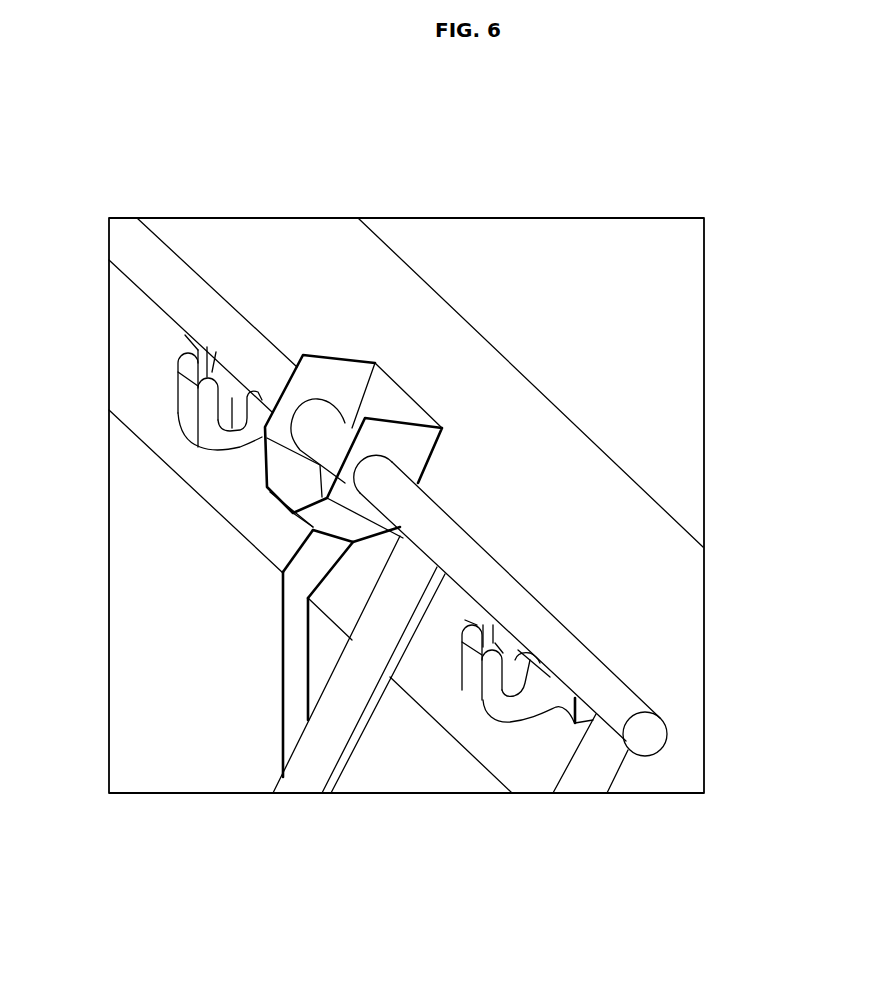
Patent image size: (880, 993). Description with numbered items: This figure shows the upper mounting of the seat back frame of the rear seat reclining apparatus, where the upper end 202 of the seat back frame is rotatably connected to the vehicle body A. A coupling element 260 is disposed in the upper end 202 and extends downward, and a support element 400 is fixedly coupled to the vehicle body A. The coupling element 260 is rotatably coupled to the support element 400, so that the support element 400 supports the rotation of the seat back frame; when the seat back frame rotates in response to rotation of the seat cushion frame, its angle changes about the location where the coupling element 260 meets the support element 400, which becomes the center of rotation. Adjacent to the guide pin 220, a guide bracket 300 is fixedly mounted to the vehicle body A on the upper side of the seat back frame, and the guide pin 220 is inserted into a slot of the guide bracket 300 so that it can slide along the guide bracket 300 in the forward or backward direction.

The upper end 202 is at (470, 567).
The guide pin 220 is at (330, 427).
The guide bracket 300 is at (418, 440).
The coupling element 260 is at (240, 450).
The support element 400 is at (200, 440).
The vehicle body A is at (625, 537).